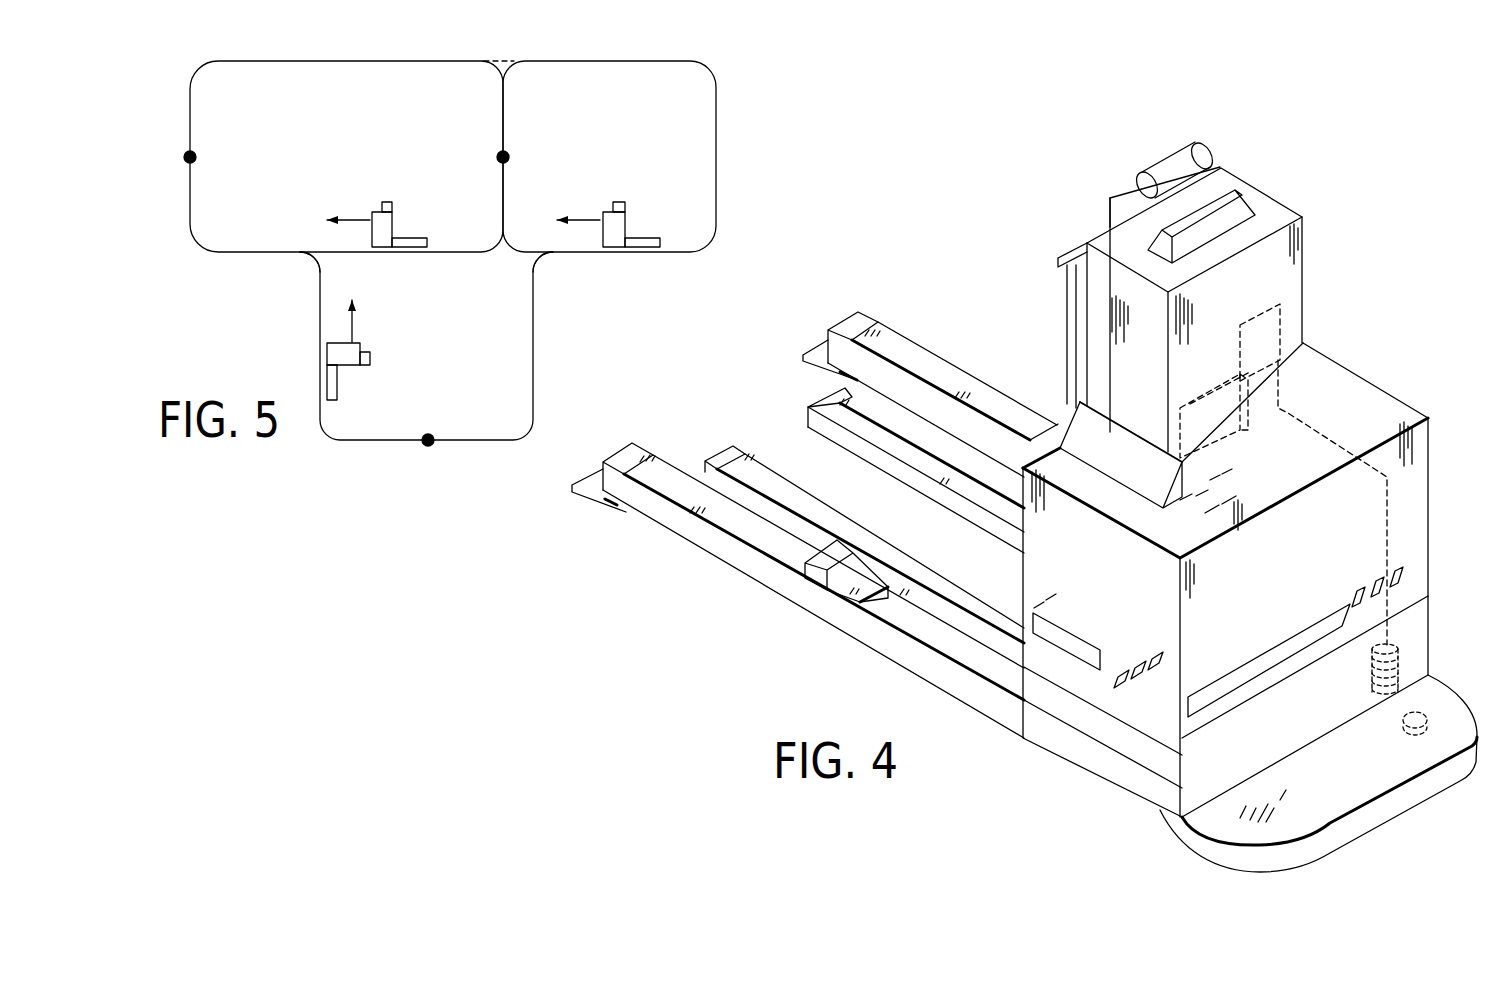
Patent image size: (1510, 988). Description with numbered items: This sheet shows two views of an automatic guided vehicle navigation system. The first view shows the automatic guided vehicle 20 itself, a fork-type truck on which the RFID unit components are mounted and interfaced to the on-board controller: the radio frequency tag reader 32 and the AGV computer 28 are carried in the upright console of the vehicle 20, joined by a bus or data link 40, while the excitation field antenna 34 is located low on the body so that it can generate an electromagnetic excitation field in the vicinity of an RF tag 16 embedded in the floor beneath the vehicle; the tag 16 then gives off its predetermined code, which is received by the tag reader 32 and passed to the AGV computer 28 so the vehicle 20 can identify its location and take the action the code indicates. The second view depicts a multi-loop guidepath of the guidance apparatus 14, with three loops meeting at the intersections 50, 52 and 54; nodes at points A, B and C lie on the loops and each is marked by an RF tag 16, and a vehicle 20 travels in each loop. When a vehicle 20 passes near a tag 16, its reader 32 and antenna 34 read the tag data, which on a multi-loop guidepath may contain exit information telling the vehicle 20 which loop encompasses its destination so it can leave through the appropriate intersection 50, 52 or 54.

In FIG. 5, the guidance apparatus 14 is at (725, 162).
In FIG. 5, the RF tag 16 is at (190, 156).
In FIG. 4, the RF tag 16 is at (1428, 711).
In FIG. 5, the automatic guided vehicle 20 is at (394, 221).
In FIG. 4, the automatic guided vehicle 20 is at (1110, 197).
In FIG. 4, the AGV computer 28 is at (1255, 419).
In FIG. 4, the radio frequency tag reader 32 is at (1290, 324).
In FIG. 4, the excitation field antenna 34 is at (1403, 659).
In FIG. 4, the bus or data link 40 is at (1222, 350).
In FIG. 5, the intersection 50 is at (551, 268).
In FIG. 5, the intersection 52 is at (514, 58).
In FIG. 5, the intersection 54 is at (306, 268).